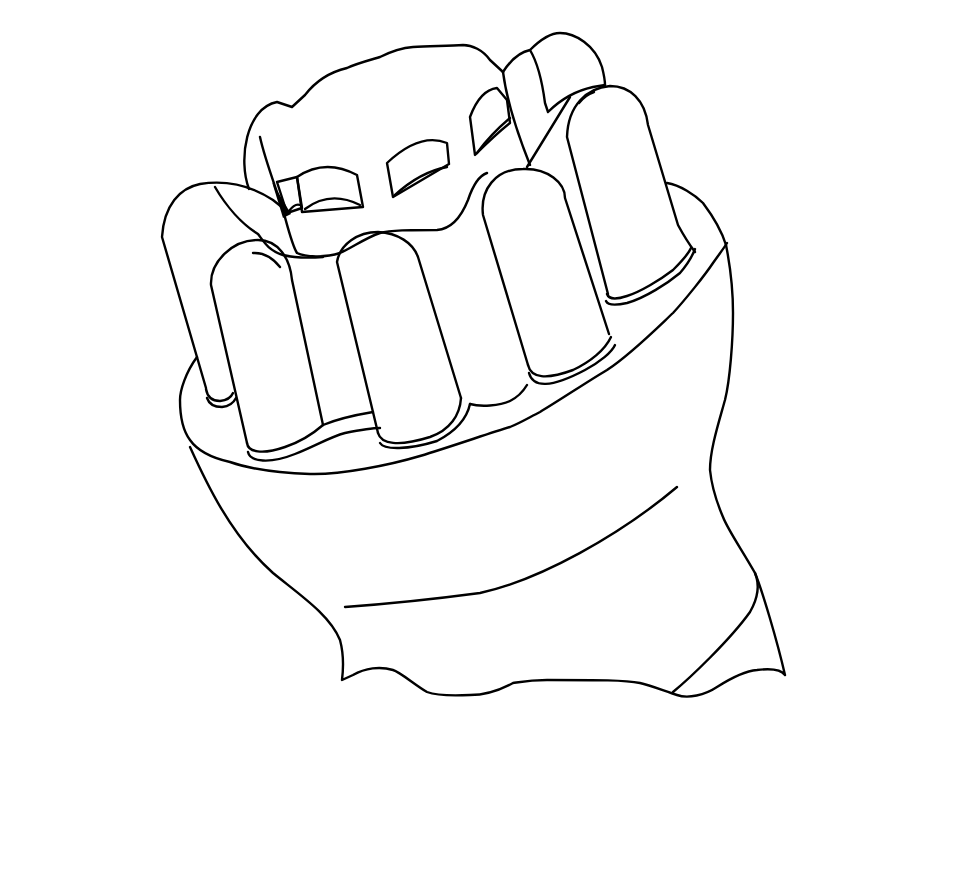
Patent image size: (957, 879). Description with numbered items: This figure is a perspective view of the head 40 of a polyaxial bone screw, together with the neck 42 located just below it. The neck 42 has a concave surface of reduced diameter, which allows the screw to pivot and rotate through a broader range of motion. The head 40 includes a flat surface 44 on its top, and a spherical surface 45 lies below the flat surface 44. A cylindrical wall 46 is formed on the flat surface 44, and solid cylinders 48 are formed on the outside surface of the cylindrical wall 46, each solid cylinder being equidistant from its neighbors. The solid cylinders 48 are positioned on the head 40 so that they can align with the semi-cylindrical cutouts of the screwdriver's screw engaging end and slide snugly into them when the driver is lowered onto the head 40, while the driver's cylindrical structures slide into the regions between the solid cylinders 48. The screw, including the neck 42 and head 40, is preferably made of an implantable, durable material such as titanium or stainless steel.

The head 40 is at (803, 129).
The neck 42 is at (727, 523).
The flat surface 44 is at (692, 222).
The spherical surface 45 is at (733, 281).
The cylindrical wall 46 is at (317, 285).
The solid cylinders 48 is at (181, 231).